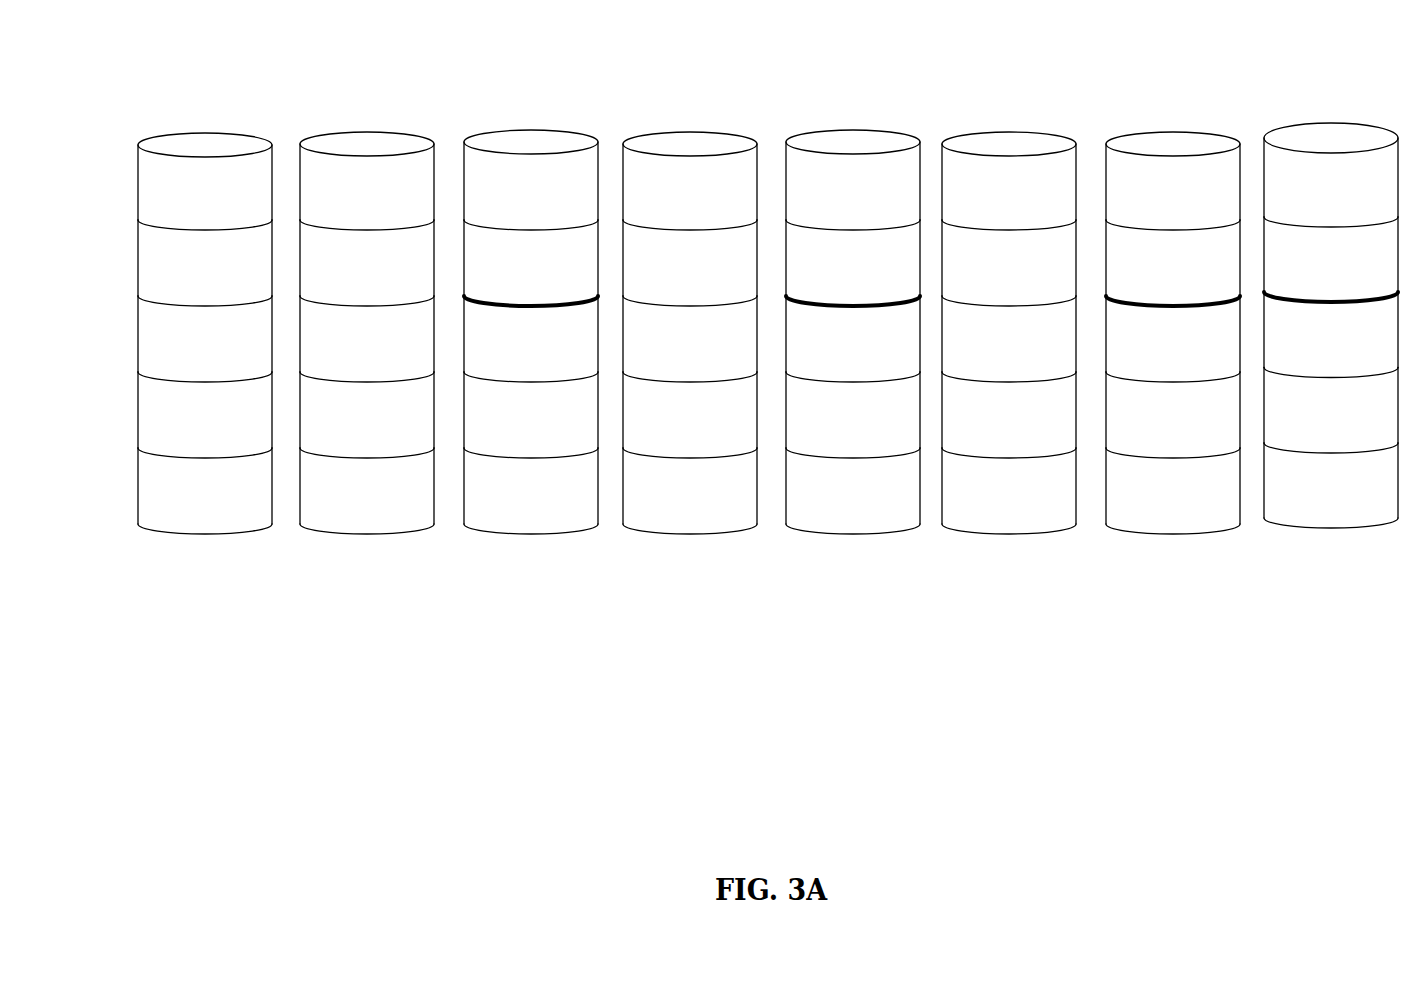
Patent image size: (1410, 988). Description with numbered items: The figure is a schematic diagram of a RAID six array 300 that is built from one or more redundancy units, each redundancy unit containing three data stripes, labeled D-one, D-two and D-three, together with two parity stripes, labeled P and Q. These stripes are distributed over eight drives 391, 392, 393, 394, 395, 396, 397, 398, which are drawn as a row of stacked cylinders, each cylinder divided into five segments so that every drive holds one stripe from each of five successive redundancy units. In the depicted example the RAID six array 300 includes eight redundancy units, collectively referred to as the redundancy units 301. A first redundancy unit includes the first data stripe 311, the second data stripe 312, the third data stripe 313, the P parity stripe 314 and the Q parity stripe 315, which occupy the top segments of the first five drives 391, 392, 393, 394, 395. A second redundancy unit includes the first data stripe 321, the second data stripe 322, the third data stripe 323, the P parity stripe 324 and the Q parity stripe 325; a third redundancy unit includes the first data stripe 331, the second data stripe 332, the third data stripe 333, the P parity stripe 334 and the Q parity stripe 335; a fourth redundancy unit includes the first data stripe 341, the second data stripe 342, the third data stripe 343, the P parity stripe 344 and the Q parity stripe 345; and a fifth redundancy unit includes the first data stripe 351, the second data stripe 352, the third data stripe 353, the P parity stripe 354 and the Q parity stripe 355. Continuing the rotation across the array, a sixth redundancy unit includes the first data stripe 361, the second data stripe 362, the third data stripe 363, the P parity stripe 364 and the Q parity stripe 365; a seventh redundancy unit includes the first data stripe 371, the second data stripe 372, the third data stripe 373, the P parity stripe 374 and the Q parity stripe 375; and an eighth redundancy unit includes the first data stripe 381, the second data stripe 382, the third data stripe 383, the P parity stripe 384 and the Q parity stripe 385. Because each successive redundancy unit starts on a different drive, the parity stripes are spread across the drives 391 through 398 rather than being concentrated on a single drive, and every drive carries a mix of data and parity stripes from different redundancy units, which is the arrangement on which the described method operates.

The RAID 6 array 300 is at (768, 410).
The redundancy units 301 is at (529, 329).
The D1 stripe of first redundancy unit 311 is at (184, 217).
The D2 stripe of first redundancy unit 312 is at (346, 217).
The D3 stripe of first redundancy unit 313 is at (510, 217).
The P stripe of first redundancy unit 314 is at (669, 217).
The Q stripe of first redundancy unit 315 is at (832, 217).
The D1 stripe of second redundancy unit 321 is at (988, 217).
The D2 stripe of second redundancy unit 322 is at (1152, 217).
The D3 stripe of second redundancy unit 323 is at (1310, 214).
The P stripe of second redundancy unit 324 is at (184, 293).
The Q stripe of second redundancy unit 325 is at (346, 293).
The D1 stripe of third redundancy unit 331 is at (510, 293).
The D2 stripe of third redundancy unit 332 is at (669, 293).
The D3 stripe of third redundancy unit 333 is at (832, 293).
The P stripe of third redundancy unit 334 is at (988, 293).
The Q stripe of third redundancy unit 335 is at (1152, 293).
The D1 stripe of fourth redundancy unit 341 is at (1310, 289).
The D2 stripe of fourth redundancy unit 342 is at (184, 369).
The D3 stripe of fourth redundancy unit 343 is at (346, 369).
The P stripe of fourth redundancy unit 344 is at (510, 369).
The Q stripe of fourth redundancy unit 345 is at (669, 369).
The D1 stripe of fifth redundancy unit 351 is at (832, 369).
The D2 stripe of fifth redundancy unit 352 is at (988, 369).
The D3 stripe of fifth redundancy unit 353 is at (1152, 369).
The P stripe of fifth redundancy unit 354 is at (1310, 364).
The Q stripe of fifth redundancy unit 355 is at (184, 445).
The D1 stripe of sixth redundancy unit 361 is at (346, 445).
The D2 stripe of sixth redundancy unit 362 is at (510, 445).
The D3 stripe of sixth redundancy unit 363 is at (669, 445).
The P stripe of sixth redundancy unit 364 is at (832, 445).
The Q stripe of sixth redundancy unit 365 is at (988, 445).
The D1 stripe of seventh redundancy unit 371 is at (1152, 445).
The D2 stripe of seventh redundancy unit 372 is at (1310, 440).
The D3 stripe of seventh redundancy unit 373 is at (205, 491).
The P stripe of seventh redundancy unit 374 is at (367, 491).
The Q stripe of seventh redundancy unit 375 is at (531, 491).
The D1 stripe of eighth redundancy unit 381 is at (690, 491).
The D2 stripe of eighth redundancy unit 382 is at (853, 491).
The D3 stripe of eighth redundancy unit 383 is at (1009, 491).
The P stripe of eighth redundancy unit 384 is at (1173, 491).
The Q stripe of eighth redundancy unit 385 is at (1331, 485).
The drive 391 is at (205, 388).
The drive 392 is at (367, 387).
The drive 393 is at (531, 386).
The drive 394 is at (690, 387).
The drive 395 is at (853, 386).
The drive 396 is at (1009, 387).
The drive 397 is at (1173, 387).
The drive 398 is at (1331, 383).